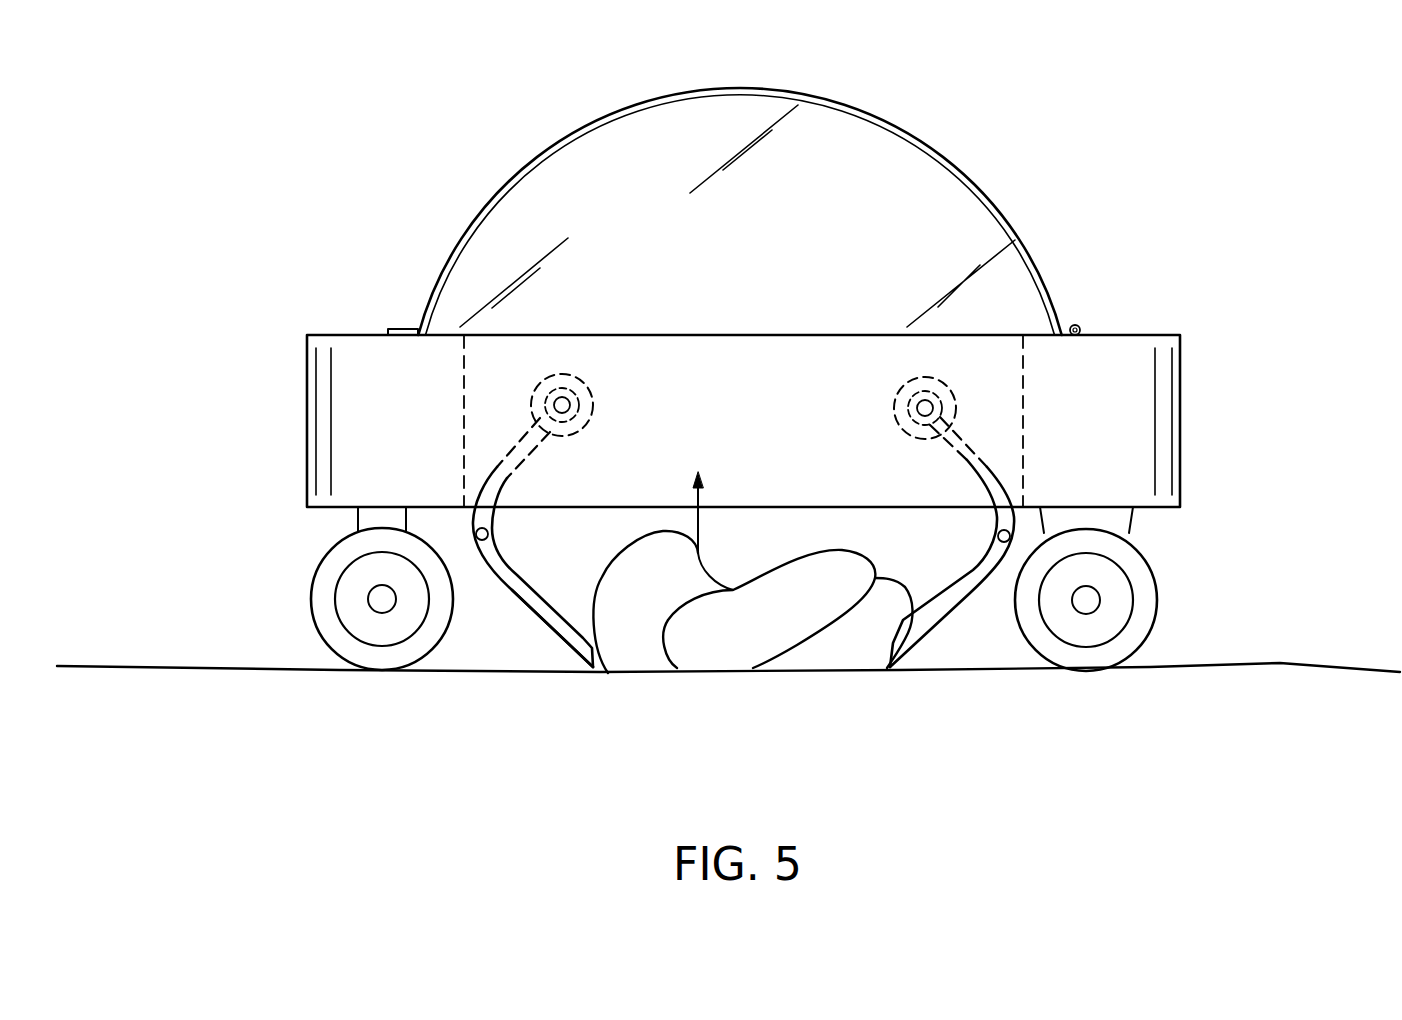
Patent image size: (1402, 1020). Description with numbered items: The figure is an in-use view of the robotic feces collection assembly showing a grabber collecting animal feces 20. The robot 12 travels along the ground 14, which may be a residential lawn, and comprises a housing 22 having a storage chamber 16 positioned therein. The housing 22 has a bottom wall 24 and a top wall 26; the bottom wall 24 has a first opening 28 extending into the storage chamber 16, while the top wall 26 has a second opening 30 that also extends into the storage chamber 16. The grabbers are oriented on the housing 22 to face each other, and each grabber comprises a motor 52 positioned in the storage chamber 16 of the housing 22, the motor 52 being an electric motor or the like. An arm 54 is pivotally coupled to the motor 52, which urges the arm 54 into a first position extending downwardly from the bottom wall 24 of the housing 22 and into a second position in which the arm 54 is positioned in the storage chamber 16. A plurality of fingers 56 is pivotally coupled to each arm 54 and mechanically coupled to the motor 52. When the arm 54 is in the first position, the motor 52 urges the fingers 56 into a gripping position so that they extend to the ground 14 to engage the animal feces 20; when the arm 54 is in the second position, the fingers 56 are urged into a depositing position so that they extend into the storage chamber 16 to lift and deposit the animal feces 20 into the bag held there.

The robot 12 is at (1165, 288).
The ground 14 is at (1343, 664).
The storage chamber 16 is at (465, 377).
The animal feces 20 is at (723, 650).
The housing 22 is at (790, 341).
The bottom wall 24 is at (322, 508).
The top wall 26 is at (1108, 333).
The first opening 28 is at (645, 668).
The second opening 30 is at (853, 355).
The motor 52 is at (570, 378).
The arm 54 is at (610, 414).
The fingers 56 is at (543, 628).